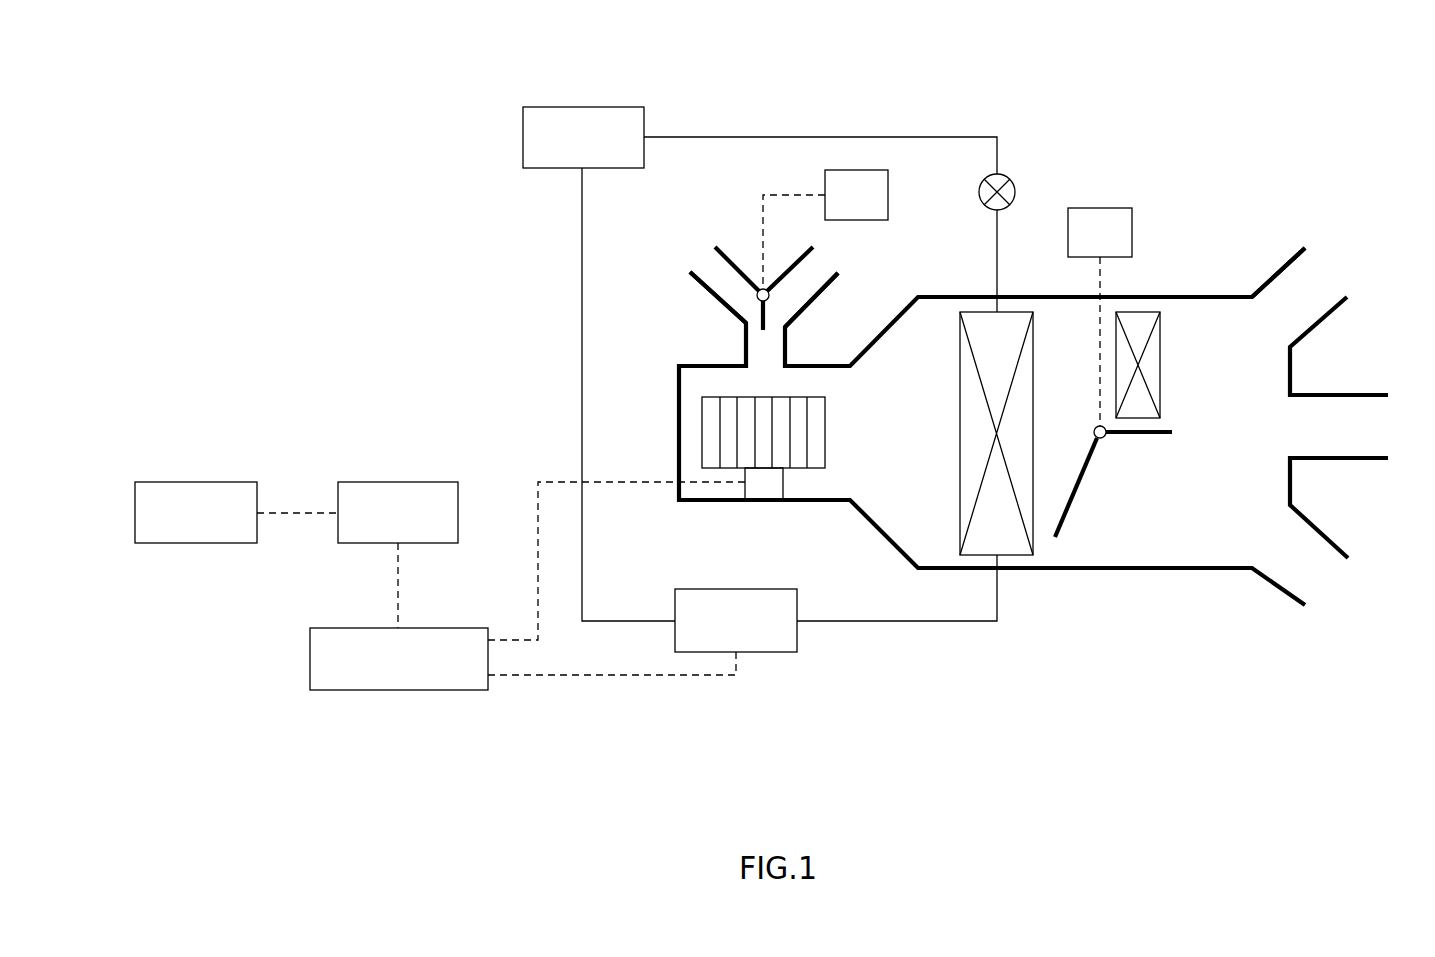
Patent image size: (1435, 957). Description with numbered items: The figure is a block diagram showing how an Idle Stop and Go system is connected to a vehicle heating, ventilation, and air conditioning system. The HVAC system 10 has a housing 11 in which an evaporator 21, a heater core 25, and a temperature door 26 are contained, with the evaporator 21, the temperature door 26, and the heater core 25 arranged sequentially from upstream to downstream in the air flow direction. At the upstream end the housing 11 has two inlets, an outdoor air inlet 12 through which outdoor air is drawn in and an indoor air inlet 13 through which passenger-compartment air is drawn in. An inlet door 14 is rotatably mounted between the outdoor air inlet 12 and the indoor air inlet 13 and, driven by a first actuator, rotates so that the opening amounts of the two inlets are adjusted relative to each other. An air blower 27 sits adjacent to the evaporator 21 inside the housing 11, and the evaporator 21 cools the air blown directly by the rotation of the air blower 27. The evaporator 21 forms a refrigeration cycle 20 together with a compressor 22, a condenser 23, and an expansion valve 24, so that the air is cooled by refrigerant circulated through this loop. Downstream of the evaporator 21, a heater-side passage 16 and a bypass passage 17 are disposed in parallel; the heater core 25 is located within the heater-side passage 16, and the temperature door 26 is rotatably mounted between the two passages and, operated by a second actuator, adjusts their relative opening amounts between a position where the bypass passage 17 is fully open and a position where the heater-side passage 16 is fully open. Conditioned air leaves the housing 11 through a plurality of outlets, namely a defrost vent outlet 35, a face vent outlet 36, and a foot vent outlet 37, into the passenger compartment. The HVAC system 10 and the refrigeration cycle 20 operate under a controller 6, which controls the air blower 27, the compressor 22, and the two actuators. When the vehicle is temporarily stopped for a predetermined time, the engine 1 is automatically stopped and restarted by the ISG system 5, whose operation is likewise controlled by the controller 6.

The engine 1 is at (195, 480).
The Idle Stop and Go (ISG) system 5 is at (398, 480).
The controller 6 is at (398, 692).
The heating, ventilation, and air conditioning (HVAC) system 10 is at (1164, 234).
The housing 11 is at (1160, 572).
The outdoor air inlet 12 is at (690, 283).
The indoor air inlet 13 is at (818, 298).
The inlet door 14 is at (757, 312).
The heater-side passage 16 is at (1077, 382).
The bypass passage 17 is at (1146, 487).
The refrigeration cycle 20 is at (795, 132).
The evaporator 21 is at (958, 468).
The compressor 22 is at (794, 654).
The condenser 23 is at (580, 106).
The expansion valve 24 is at (1009, 180).
The heater core 25 is at (1162, 365).
The temperature door 26 is at (1070, 517).
The air blower 27 is at (827, 418).
The defrost vent outlet 35 is at (1278, 270).
The face vent outlet 36 is at (1360, 392).
The foot vent outlet 37 is at (1330, 536).